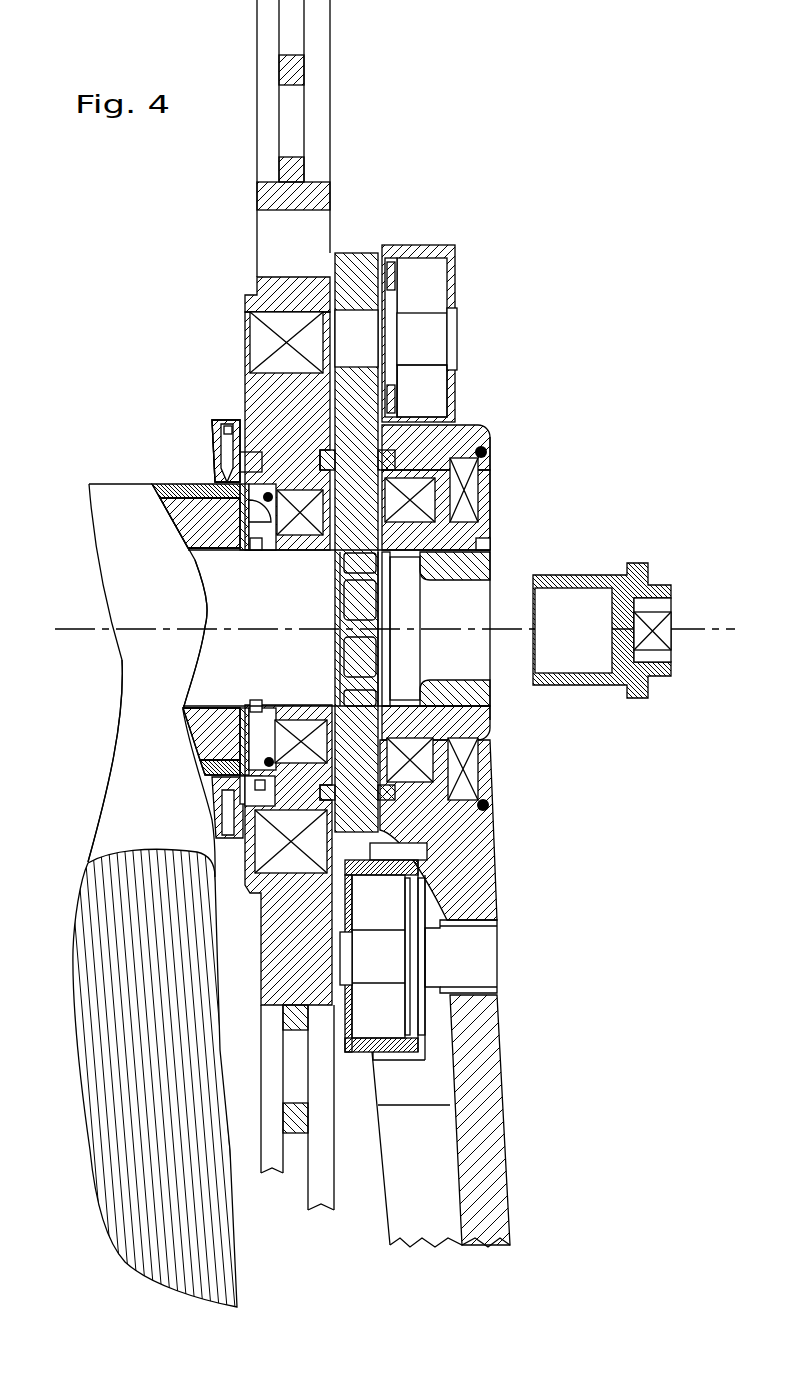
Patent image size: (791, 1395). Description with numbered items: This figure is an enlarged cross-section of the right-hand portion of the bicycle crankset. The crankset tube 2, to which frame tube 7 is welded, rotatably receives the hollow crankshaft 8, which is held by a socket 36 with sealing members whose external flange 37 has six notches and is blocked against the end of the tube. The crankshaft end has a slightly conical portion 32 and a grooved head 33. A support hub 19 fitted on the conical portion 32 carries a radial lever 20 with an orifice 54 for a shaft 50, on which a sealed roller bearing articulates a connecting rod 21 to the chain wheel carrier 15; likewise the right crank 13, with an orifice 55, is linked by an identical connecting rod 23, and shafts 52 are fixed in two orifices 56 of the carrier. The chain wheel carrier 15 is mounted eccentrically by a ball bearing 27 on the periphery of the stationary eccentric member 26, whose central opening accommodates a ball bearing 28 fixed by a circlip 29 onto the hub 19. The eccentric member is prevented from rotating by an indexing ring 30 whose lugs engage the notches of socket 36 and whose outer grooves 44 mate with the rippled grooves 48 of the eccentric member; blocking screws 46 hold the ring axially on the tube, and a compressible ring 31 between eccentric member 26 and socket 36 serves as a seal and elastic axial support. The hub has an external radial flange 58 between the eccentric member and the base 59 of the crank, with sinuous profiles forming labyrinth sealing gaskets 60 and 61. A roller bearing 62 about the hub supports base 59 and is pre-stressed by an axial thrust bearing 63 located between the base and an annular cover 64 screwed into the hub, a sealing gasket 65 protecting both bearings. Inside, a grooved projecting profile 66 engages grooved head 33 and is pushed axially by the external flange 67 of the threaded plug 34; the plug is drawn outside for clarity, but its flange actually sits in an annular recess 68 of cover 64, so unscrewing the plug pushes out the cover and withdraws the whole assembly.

The crankset tube 2 is at (152, 487).
The frame tube 7 is at (100, 1090).
The crankshaft 8 is at (206, 682).
The right crank 13 is at (482, 1050).
The chain wheel carrier 15 is at (278, 290).
The support hub 19 is at (490, 522).
The radial lever 20 is at (350, 257).
The articulated connecting rod 21 is at (433, 248).
The articulated connecting rod 23 is at (366, 1052).
The eccentric member 26 is at (262, 383).
The ball bearing 27 is at (267, 335).
The ball bearing 28 is at (212, 808).
The circlip 29 is at (245, 722).
The indexing ring 30 is at (195, 424).
The compressible ring 31 is at (232, 545).
The conical portion 32 is at (306, 554).
The grooved head 33 is at (363, 670).
The threaded plug 34 is at (676, 570).
The socket 36 is at (230, 506).
The external flange 37 is at (300, 757).
The grooves 44 is at (250, 463).
The blocking screws 46 is at (232, 448).
The rippled grooves 48 is at (250, 463).
The shaft 50 is at (435, 340).
The shaft 52 is at (470, 968).
The orifice 54 is at (400, 323).
The orifice 55 is at (497, 960).
The orifices 56 is at (278, 230).
The external radial flange 58 is at (395, 800).
The base 59 is at (485, 436).
The labyrinth sealing gasket 60 is at (330, 442).
The labyrinth sealing gasket 61 is at (405, 434).
The roller bearing 62 is at (410, 782).
The axial thrust bearing 63 is at (488, 765).
The annular cover 64 is at (485, 735).
The sealing gasket 65 is at (490, 807).
The grooved projecting profile 66 is at (400, 562).
The external flange 67 is at (640, 563).
The annular recess 68 is at (378, 700).